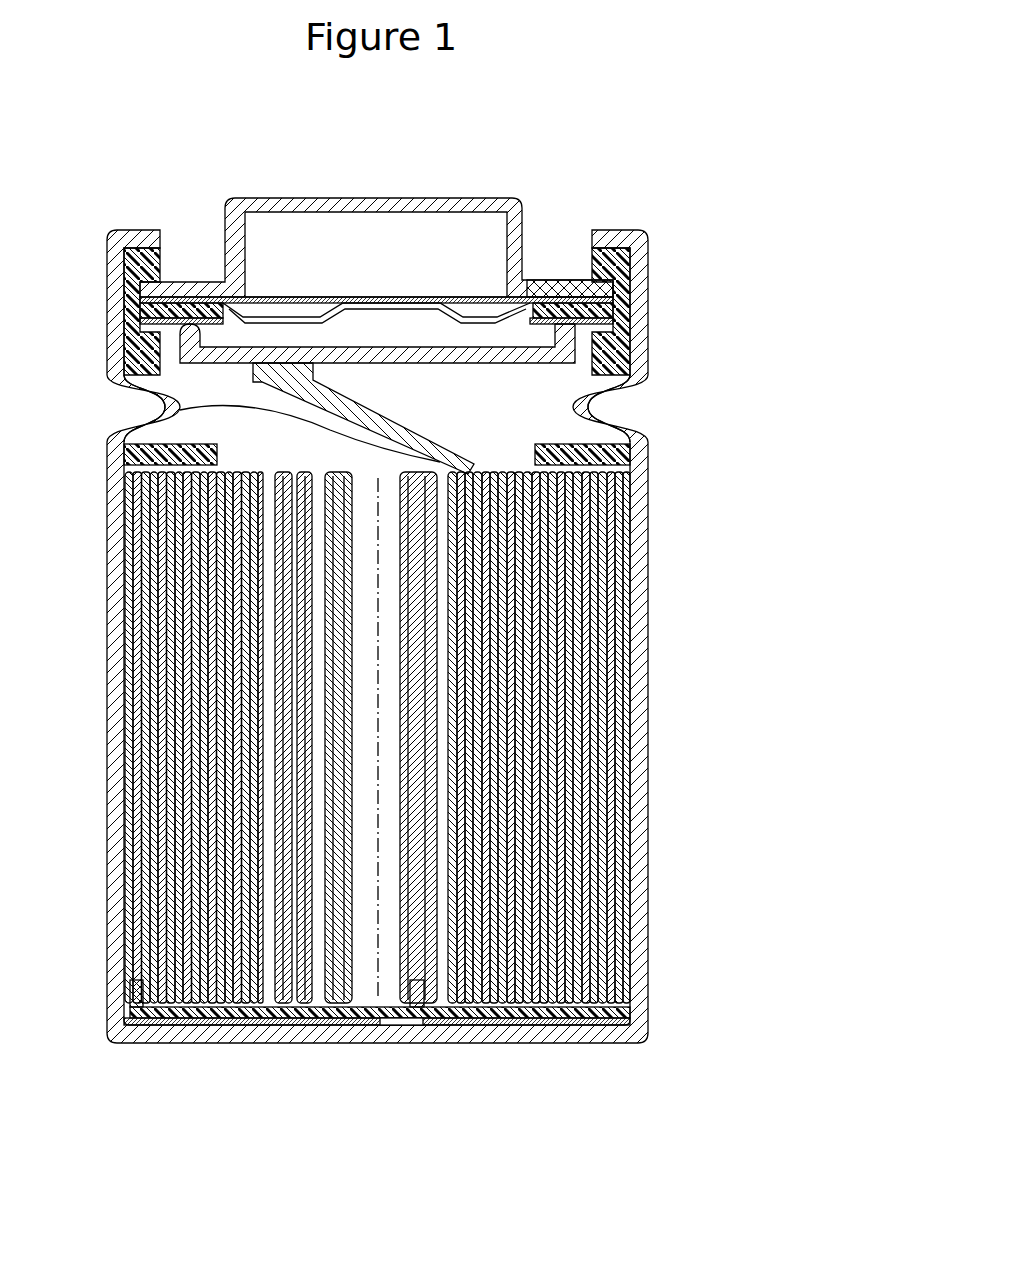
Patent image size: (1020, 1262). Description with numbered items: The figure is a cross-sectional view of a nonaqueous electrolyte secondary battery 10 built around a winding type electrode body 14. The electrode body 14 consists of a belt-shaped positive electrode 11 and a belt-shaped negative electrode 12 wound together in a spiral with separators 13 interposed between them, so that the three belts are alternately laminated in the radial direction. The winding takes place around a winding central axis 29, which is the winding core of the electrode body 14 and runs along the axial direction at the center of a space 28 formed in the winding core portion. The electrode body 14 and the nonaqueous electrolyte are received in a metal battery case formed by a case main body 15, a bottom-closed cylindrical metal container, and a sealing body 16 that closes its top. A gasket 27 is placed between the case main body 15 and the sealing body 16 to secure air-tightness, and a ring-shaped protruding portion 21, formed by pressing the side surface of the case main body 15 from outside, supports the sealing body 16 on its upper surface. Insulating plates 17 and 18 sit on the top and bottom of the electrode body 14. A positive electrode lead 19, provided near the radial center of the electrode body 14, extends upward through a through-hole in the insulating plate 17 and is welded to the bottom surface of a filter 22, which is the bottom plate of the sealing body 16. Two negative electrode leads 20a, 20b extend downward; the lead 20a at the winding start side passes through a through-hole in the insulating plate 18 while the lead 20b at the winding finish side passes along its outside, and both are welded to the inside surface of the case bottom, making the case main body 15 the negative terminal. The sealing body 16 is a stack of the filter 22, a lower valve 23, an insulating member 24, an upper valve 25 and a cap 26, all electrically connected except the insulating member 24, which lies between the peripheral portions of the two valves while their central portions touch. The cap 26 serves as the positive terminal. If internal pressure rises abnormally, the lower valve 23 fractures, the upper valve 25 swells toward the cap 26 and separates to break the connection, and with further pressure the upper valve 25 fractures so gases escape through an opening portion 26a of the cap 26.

The nonaqueous electrolyte secondary battery 10 is at (640, 142).
The positive electrode 11 is at (600, 690).
The negative electrode 12 is at (600, 738).
The separators 13 is at (600, 783).
The electrode body 14 is at (745, 672).
The case main body 15 is at (636, 228).
The sealing body 16 is at (514, 203).
The insulating plate 17 is at (635, 455).
The insulating plate 18 is at (640, 1015).
The positive electrode lead 19 is at (162, 405).
The negative electrode lead 20a is at (405, 1018).
The negative electrode lead 20b is at (215, 1018).
The protruding portion 21 is at (598, 406).
The filter 22 is at (575, 357).
The lower valve 23 is at (305, 300).
The insulating member 24 is at (178, 292).
The upper valve 25 is at (236, 284).
The cap 26 is at (458, 198).
The opening portion 26a is at (524, 247).
The gasket 27 is at (640, 280).
The space 28 is at (340, 1010).
The winding central axis 29 is at (372, 1002).